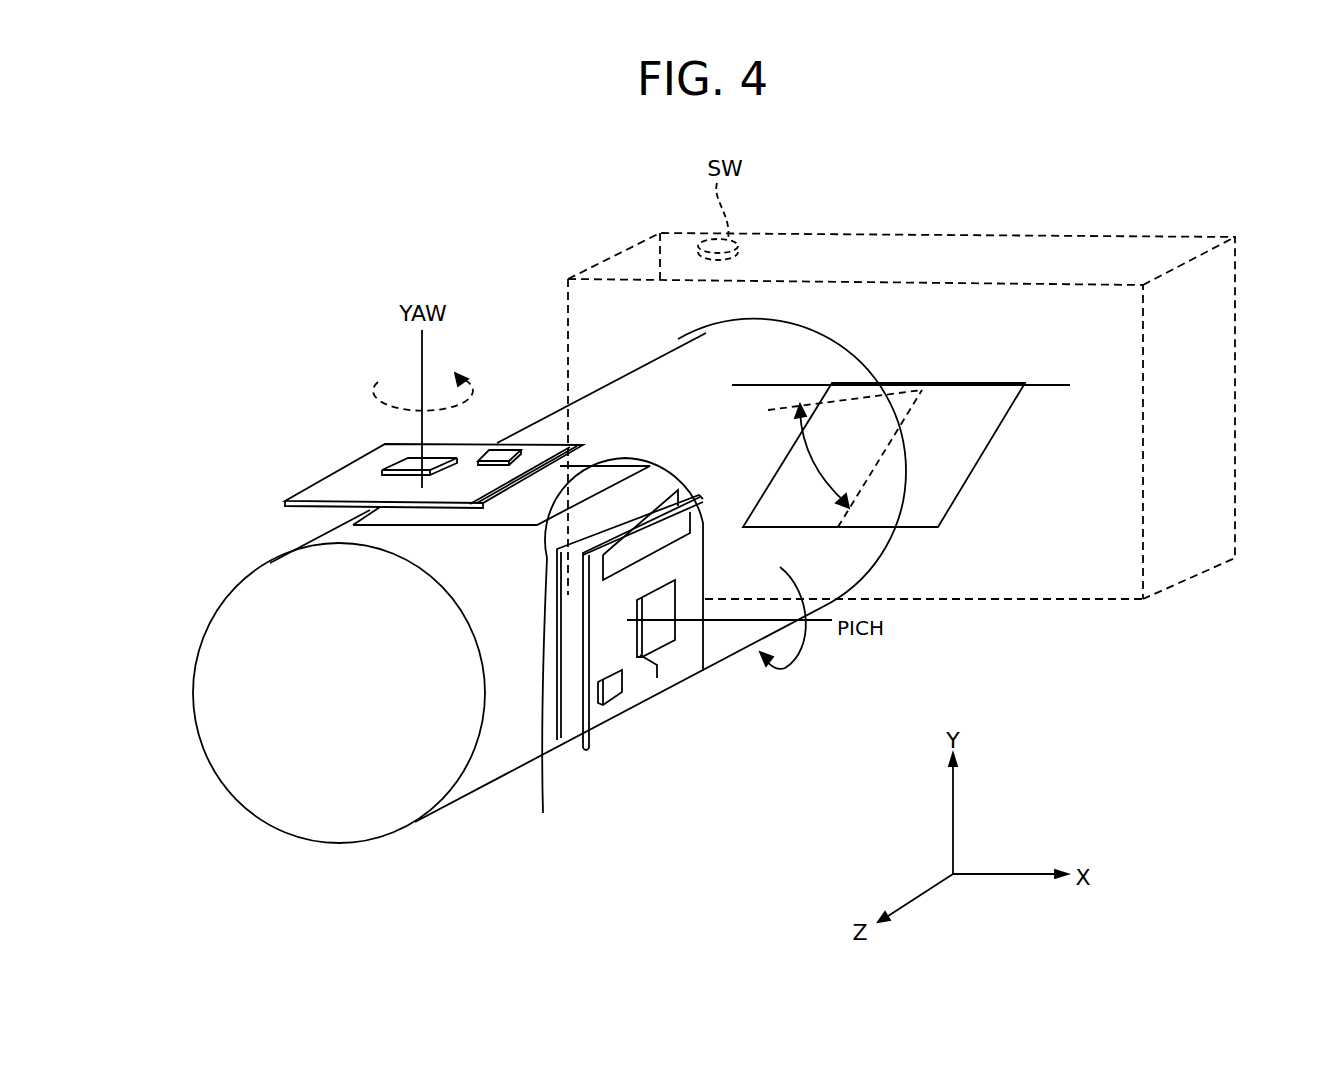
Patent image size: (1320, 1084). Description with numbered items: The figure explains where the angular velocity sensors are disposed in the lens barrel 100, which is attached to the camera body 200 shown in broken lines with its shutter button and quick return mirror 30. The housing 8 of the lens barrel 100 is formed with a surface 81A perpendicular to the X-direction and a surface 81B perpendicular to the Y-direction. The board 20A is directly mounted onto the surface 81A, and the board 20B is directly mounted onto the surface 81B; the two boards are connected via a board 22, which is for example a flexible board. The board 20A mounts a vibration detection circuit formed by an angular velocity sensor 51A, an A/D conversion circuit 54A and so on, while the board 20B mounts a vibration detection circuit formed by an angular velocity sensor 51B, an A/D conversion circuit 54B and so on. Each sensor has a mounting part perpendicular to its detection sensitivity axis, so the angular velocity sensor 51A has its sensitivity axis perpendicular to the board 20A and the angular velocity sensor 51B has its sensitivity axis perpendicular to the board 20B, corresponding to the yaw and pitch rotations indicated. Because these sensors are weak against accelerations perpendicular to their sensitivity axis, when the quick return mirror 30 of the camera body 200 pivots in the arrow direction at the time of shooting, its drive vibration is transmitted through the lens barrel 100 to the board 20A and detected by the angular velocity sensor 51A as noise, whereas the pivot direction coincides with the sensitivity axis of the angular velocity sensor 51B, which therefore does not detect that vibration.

The housing 8 is at (357, 537).
The lens barrel 100 is at (493, 763).
The board 22 is at (614, 674).
The board 20A is at (615, 710).
The board 20B is at (343, 487).
The angular velocity sensor 51A is at (650, 638).
The angular velocity sensor 51B is at (410, 463).
The A/D conversion circuit 54A is at (613, 690).
The A/D conversion circuit 54B is at (497, 443).
The surface 81A is at (563, 732).
The surface 81B is at (613, 478).
The quick return mirror 30 is at (920, 510).
The camera body 200 is at (1047, 577).